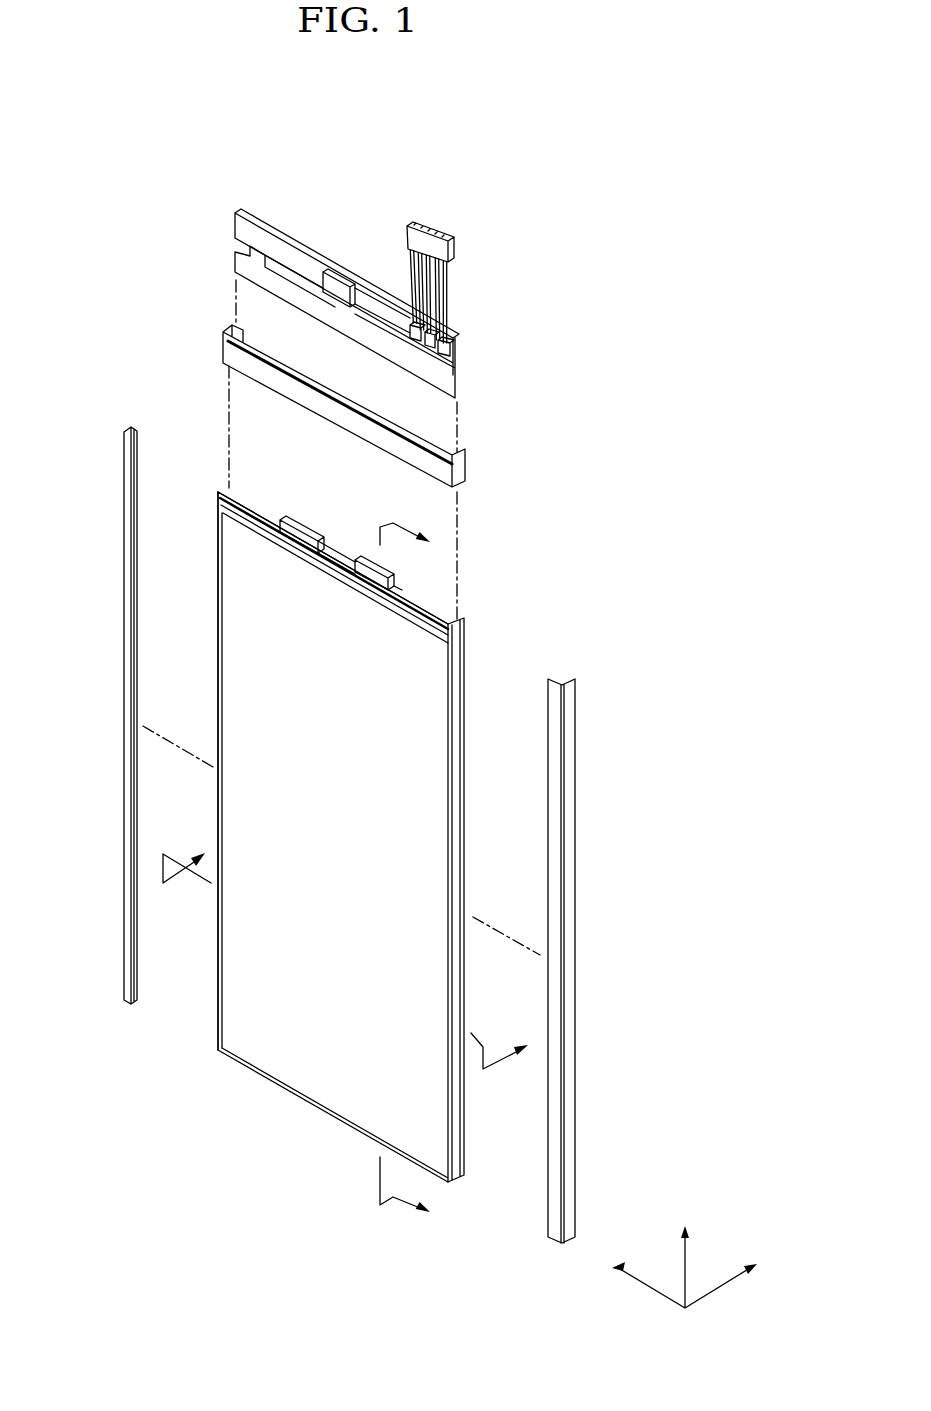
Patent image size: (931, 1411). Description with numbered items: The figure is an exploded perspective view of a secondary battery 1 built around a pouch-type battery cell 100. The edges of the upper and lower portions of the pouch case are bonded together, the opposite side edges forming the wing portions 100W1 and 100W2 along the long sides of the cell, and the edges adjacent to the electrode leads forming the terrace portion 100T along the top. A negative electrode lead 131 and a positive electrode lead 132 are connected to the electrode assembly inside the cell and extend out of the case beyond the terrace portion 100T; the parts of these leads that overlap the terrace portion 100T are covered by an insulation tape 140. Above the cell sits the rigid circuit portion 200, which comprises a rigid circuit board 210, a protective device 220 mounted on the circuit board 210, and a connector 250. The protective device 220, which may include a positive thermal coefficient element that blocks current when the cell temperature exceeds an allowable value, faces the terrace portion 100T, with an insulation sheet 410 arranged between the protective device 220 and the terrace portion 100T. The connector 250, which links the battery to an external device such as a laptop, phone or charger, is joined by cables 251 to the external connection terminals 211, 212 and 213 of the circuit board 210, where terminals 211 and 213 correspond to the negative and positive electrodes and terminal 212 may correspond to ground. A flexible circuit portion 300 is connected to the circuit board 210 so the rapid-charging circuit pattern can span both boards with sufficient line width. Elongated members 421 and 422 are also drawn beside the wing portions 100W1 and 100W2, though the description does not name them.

The secondary battery 1 is at (565, 200).
The battery cell 100 is at (320, 1110).
The terrace portion 100T is at (430, 620).
The wing portion 100W1 is at (465, 656).
The wing portion 100W2 is at (218, 490).
The negative electrode lead 131 is at (387, 567).
The positive electrode lead 132 is at (300, 520).
The insulation tape 140 is at (352, 562).
The rigid circuit portion 200 is at (222, 226).
The rigid circuit board 210 is at (233, 214).
The external connection terminal 211 is at (410, 331).
The external connection terminal 212 is at (453, 362).
The external connection terminal 213 is at (428, 374).
The protective device 220 is at (345, 287).
The connector 250 is at (422, 228).
The cables 251 is at (447, 285).
The flexible circuit portion 300 is at (222, 265).
The insulation sheet 410 is at (228, 349).
The first side frame 421 is at (565, 960).
The second side frame 422 is at (124, 716).